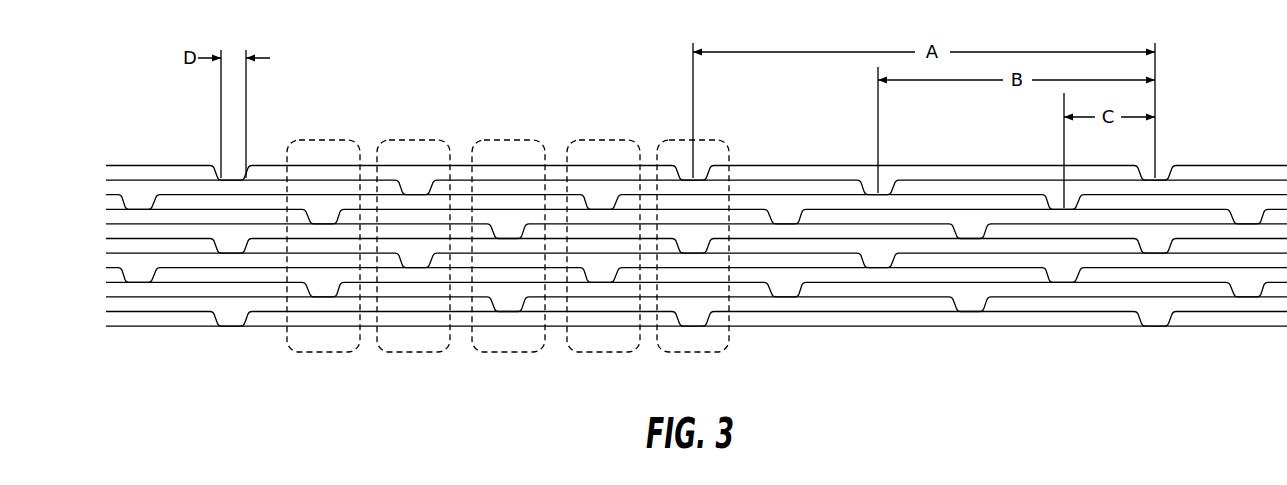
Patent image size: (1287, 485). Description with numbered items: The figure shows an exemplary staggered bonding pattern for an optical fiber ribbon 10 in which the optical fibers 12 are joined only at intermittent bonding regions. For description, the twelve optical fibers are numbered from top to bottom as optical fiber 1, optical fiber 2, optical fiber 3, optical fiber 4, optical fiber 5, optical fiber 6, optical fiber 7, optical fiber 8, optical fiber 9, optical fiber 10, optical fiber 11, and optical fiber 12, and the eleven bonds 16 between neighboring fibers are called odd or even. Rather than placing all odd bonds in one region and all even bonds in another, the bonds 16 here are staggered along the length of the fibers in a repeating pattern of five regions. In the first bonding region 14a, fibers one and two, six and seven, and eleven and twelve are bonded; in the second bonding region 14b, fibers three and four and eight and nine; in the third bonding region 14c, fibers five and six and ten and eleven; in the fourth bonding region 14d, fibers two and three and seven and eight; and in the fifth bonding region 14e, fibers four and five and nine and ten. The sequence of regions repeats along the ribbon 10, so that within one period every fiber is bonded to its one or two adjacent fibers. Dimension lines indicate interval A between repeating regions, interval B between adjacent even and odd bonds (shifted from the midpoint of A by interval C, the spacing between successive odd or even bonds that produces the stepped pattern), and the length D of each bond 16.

The optical fiber 1 is at (107, 166).
The optical fiber 2 is at (110, 180).
The optical fiber 3 is at (112, 195).
The optical fiber 4 is at (106, 209).
The optical fiber 5 is at (106, 224).
The optical fiber 6 is at (106, 238).
The optical fiber 7 is at (106, 253).
The optical fiber 8 is at (106, 268).
The optical fiber 9 is at (108, 282).
The optical fiber ribbon 10 is at (110, 297).
The optical fiber 11 is at (110, 312).
The optical fibers 12 is at (110, 326).
The first bonding region 14a is at (688, 140).
The second bonding region 14b is at (598, 140).
The third bonding region 14c is at (503, 140).
The fourth bonding region 14d is at (408, 140).
The fifth bonding region 14e is at (318, 140).
The bond 16 is at (510, 232).